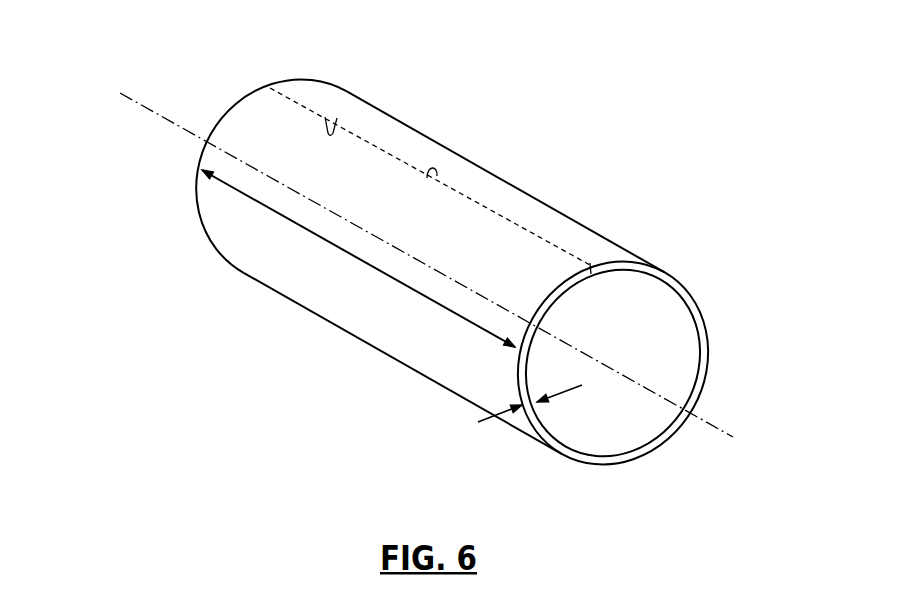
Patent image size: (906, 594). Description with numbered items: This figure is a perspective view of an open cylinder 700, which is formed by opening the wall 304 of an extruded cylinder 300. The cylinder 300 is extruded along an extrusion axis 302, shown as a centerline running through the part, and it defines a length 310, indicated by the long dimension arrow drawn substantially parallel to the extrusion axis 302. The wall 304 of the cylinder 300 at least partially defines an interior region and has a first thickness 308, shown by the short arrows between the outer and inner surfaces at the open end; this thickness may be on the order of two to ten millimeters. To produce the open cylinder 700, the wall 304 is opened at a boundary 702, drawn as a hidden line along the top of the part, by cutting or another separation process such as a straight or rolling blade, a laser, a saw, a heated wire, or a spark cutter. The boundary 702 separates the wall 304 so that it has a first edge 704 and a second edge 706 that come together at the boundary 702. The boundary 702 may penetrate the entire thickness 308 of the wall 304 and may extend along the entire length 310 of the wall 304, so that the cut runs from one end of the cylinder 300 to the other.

The cylinder 300 is at (313, 90).
The extrusion axis 302 is at (155, 117).
The wall 304 is at (690, 302).
The first thickness 308 is at (511, 411).
The length 310 is at (282, 218).
The open cylinder 700 is at (565, 117).
The boundary 702 is at (392, 152).
The first edge 704 is at (331, 134).
The second edge 706 is at (428, 178).